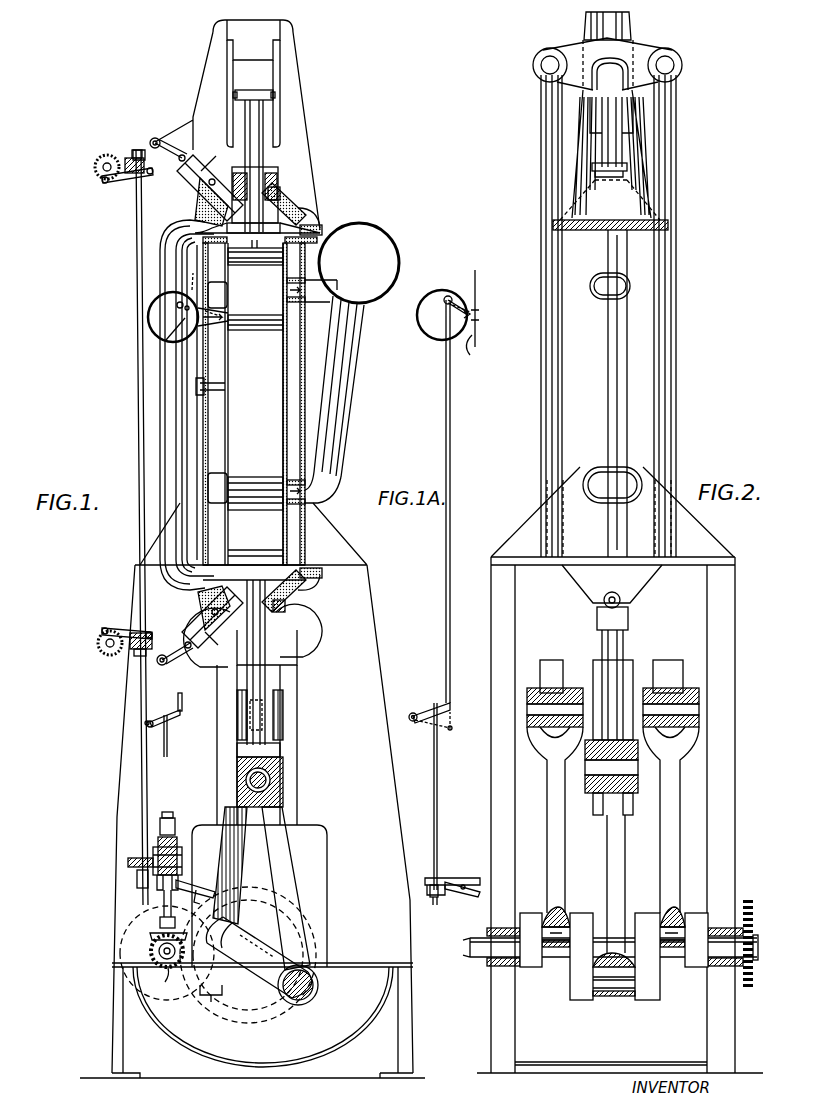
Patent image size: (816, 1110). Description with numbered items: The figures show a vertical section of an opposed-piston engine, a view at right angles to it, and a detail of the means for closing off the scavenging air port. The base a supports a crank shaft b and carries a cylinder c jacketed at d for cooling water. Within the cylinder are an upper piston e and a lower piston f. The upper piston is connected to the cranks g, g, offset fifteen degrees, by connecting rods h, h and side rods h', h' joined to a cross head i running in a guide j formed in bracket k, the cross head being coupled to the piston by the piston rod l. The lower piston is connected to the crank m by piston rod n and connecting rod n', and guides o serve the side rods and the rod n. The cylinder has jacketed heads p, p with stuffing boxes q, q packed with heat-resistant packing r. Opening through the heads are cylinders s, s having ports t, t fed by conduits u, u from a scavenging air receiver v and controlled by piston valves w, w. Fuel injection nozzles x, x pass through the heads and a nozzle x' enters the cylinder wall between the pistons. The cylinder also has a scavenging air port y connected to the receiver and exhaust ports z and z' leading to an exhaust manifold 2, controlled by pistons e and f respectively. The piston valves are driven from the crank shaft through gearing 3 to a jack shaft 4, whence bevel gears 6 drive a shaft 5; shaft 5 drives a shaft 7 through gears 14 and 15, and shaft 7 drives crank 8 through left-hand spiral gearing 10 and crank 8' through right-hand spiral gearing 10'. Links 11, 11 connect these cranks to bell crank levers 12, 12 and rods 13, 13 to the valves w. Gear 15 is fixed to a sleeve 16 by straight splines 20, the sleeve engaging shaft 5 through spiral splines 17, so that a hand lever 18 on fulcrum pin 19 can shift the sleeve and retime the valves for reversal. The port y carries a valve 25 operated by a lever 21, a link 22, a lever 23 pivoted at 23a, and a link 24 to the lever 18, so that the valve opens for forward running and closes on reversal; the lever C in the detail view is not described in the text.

In FIG. 1, the base a is at (405, 825).
In FIG. 2, the base a is at (735, 825).
In FIG. 2, the crank shaft b is at (470, 957).
In FIG. 1, the cylinder c is at (254, 411).
In FIG. 2, the cylinder c is at (615, 393).
In FIG. 1, the jacket d is at (330, 385).
In FIG. 1, the upper piston e is at (245, 278).
In FIG. 1, the lower piston f is at (245, 514).
In FIG. 1, the cranks g is at (258, 917).
In FIG. 2, the cranks g is at (530, 913).
In FIG. 1, the connecting rods h is at (235, 865).
In FIG. 2, the connecting rods h is at (611, 820).
In FIG. 2, the side rods h' is at (607, 316).
In FIG. 1, the cross head i is at (268, 58).
In FIG. 2, the cross head i is at (625, 44).
In FIG. 1, the guide j is at (278, 75).
In FIG. 2, the guide j is at (588, 30).
In FIG. 1, the bracket k is at (300, 105).
In FIG. 2, the bracket k is at (640, 148).
In FIG. 1, the piston rod l is at (256, 160).
In FIG. 2, the piston rod l is at (610, 125).
In FIG. 1, the crank m is at (290, 985).
In FIG. 2, the crank m is at (590, 1000).
In FIG. 1, the piston rod n is at (276, 662).
In FIG. 2, the piston rod n is at (623, 685).
In FIG. 1, the connecting rod n' is at (287, 888).
In FIG. 2, the connecting rod n' is at (628, 884).
In FIG. 1, the guides o is at (283, 750).
In FIG. 2, the guides o is at (565, 676).
In FIG. 1, the cylinder heads p is at (306, 212).
In FIG. 1, the stuffing boxes q is at (238, 172).
In FIG. 1, the packing r is at (278, 180).
In FIG. 1, the cylinders s is at (192, 184).
In FIG. 1, the ports t is at (178, 215).
In FIG. 1, the conduits u is at (160, 262).
In FIG. 1, the scavenging air receiver v is at (150, 317).
In FIG. 1A, the scavenging air receiver v is at (417, 318).
In FIG. 1, the piston valves w is at (210, 178).
In FIG. 1, the fuel injection nozzles x is at (297, 384).
In FIG. 2, the fuel injection nozzles x is at (612, 597).
In FIG. 1, the fuel injection nozzle x' is at (205, 398).
In FIG. 1, the scavenging air port y is at (204, 327).
In FIG. 1A, the scavenging air port y is at (475, 300).
In FIG. 1, the exhaust port z is at (312, 305).
In FIG. 2, the exhaust port z is at (610, 301).
In FIG. 1, the exhaust port z' is at (313, 499).
In FIG. 2, the exhaust port z' is at (612, 473).
In FIG. 1A, the lever C is at (467, 357).
In FIG. 1, the exhaust manifold 2 is at (397, 268).
In FIG. 1, the gearing 3 is at (211, 1000).
In FIG. 2, the gearing 3 is at (752, 900).
In FIG. 1, the jack shaft 4 is at (164, 980).
In FIG. 1, the shaft 5 is at (164, 905).
In FIG. 1A, the shaft 5 is at (433, 905).
In FIG. 1, the bevel gears 6 is at (150, 950).
In FIG. 1, the shaft 7 is at (138, 445).
In FIG. 1, the crank 8 is at (98, 643).
In FIG. 1, the crank 8' is at (90, 170).
In FIG. 1, the left-hand spiral gearing 10 is at (128, 657).
In FIG. 1, the right-hand spiral gearing 10' is at (125, 146).
In FIG. 1, the links 11 is at (125, 182).
In FIG. 1, the bell crank levers 12 is at (152, 148).
In FIG. 1, the rods 13 is at (178, 170).
In FIG. 1, the gear 14 is at (128, 862).
In FIG. 1, the gear 15 is at (182, 862).
In FIG. 1, the sleeve 16 is at (157, 888).
In FIG. 1A, the sleeve 16 is at (430, 892).
In FIG. 1, the spiral splines 17 is at (177, 845).
In FIG. 1, the hand lever 18 is at (204, 902).
In FIG. 1A, the hand lever 18 is at (455, 878).
In FIG. 1, the fulcrum pin 19 is at (200, 888).
In FIG. 1A, the fulcrum pin 19 is at (468, 885).
In FIG. 1, the straight splines 20 is at (158, 840).
In FIG. 1, the lever 21 is at (192, 289).
In FIG. 1A, the lever 21 is at (447, 296).
In FIG. 1, the link 22 is at (182, 700).
In FIG. 1A, the link 22 is at (446, 392).
In FIG. 1, the lever 23 is at (172, 718).
In FIG. 1A, the lever 23 is at (440, 707).
In FIG. 1, the pivot 23a is at (148, 720).
In FIG. 1A, the pivot 23a is at (410, 714).
In FIG. 1, the link 24 is at (167, 745).
In FIG. 1A, the link 24 is at (437, 815).
In FIG. 1, the valve 25 is at (162, 339).